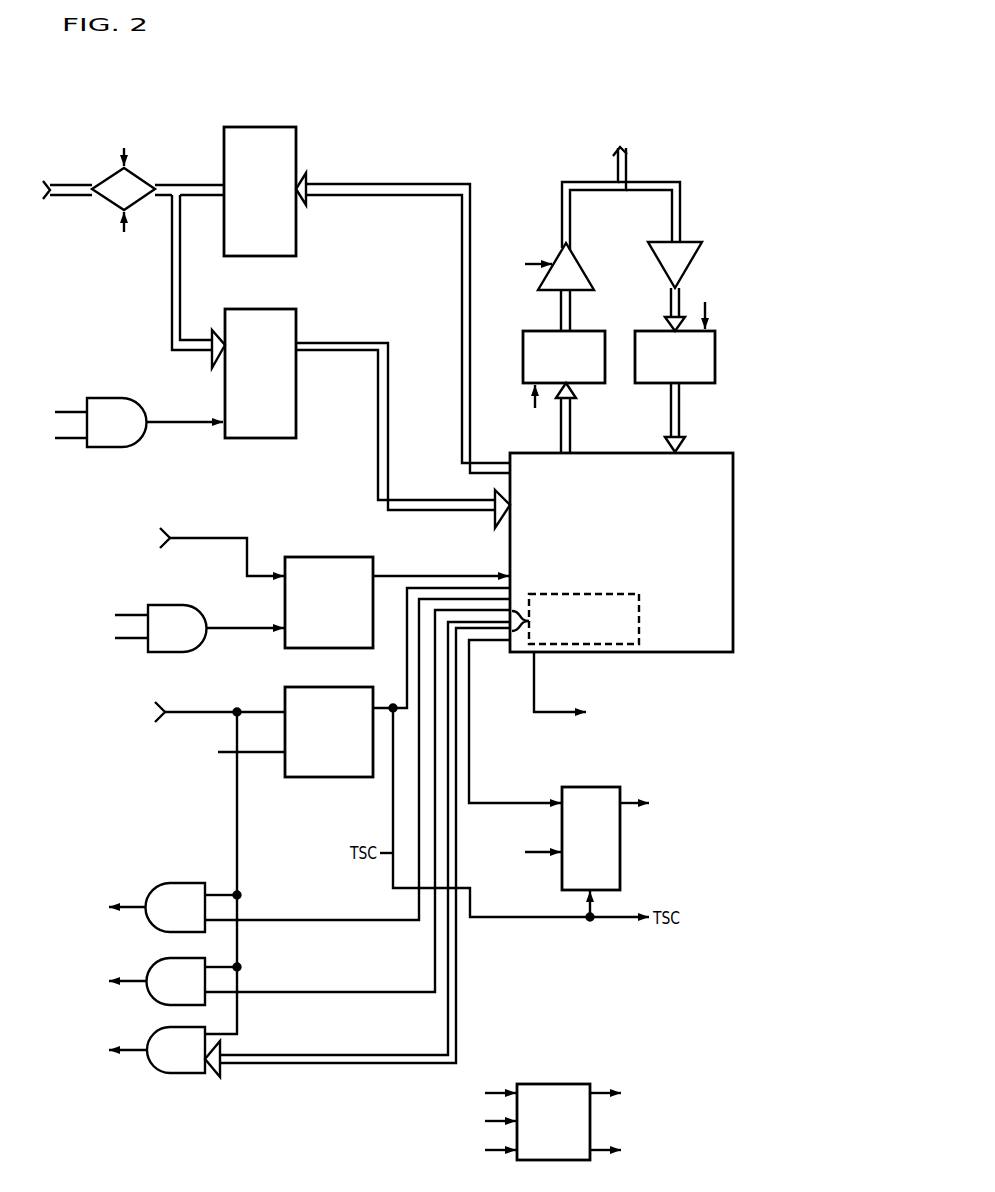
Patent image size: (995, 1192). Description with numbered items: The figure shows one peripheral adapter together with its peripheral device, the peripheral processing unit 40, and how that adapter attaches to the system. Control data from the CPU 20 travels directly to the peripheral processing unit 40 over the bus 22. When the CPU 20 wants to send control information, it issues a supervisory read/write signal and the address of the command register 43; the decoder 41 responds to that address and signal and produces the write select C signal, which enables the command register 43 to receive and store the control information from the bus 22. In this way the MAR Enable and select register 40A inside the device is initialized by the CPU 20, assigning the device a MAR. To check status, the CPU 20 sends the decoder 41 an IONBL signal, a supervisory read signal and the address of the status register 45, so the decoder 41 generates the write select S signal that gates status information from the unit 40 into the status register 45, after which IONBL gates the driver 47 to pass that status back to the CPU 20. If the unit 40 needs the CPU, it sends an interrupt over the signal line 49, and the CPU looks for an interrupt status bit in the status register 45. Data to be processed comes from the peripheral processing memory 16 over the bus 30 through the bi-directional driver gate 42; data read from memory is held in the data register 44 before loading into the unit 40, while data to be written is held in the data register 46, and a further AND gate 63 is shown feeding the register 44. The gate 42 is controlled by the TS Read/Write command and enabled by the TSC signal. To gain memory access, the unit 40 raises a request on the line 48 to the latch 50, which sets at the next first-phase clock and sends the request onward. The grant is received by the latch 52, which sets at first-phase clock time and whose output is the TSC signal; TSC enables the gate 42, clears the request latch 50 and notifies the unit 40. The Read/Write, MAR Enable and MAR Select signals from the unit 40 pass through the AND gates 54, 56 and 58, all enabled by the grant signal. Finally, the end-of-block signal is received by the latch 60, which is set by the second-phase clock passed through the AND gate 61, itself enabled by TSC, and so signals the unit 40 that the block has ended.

The peripheral processing memory 16 is at (16, 193).
The data bus 30 is at (76, 184).
The bi-directional driver gate 42 is at (132, 173).
The data register 46 is at (297, 129).
The data register 44 is at (296, 315).
The AND gate 63 is at (130, 399).
The CPU 20 is at (637, 140).
The bus 22 is at (627, 167).
The driver 47 is at (579, 263).
The status register 45 is at (585, 385).
The command register 43 is at (690, 385).
The peripheral processing unit 40 is at (665, 652).
The MAR Enable and select register 40A is at (610, 645).
The interrupt signal line 49 is at (535, 694).
The request signal line 48 is at (470, 779).
The request latch 50 is at (592, 787).
The EOB latch 60 is at (325, 556).
The AND gate 61 is at (182, 604).
The grant latch 52 is at (340, 778).
The AND gate 54 is at (160, 884).
The AND gate 56 is at (160, 960).
The AND gate 58 is at (162, 1031).
The decoder 41 is at (558, 1084).